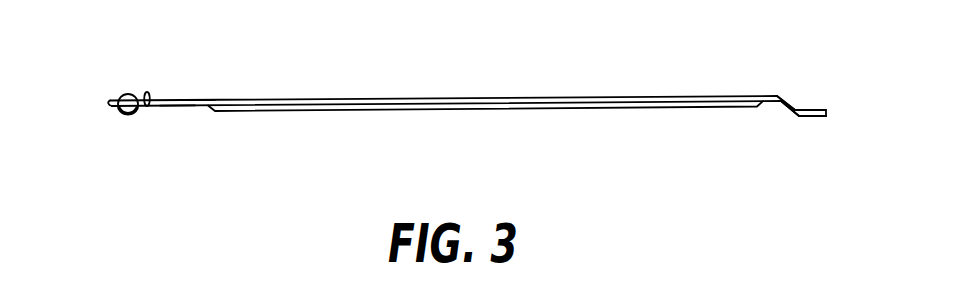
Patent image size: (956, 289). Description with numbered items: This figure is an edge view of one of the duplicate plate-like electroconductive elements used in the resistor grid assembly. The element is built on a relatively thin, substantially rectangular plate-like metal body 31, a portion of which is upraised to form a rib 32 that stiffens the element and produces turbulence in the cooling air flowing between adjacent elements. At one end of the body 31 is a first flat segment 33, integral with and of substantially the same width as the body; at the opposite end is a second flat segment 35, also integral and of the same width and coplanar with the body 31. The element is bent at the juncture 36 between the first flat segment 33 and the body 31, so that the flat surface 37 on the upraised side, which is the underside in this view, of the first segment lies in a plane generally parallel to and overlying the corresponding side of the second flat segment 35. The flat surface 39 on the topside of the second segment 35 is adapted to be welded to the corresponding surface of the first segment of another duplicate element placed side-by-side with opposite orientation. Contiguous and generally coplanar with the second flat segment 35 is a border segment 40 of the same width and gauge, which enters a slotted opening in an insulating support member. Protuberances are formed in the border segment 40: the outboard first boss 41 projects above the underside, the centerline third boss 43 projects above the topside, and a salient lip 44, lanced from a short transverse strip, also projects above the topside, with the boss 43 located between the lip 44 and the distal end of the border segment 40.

The plate-like metal body 31 is at (495, 98).
The rib 32 is at (423, 111).
The first flat segment 33 is at (827, 112).
The second flat segment 35 is at (172, 109).
The juncture 36 is at (790, 97).
The flat surface 37 is at (803, 118).
The flat surface 39 is at (197, 98).
The border segment 40 is at (110, 105).
The first boss 41 is at (128, 114).
The third boss 43 is at (128, 94).
The salient lip 44 is at (147, 92).